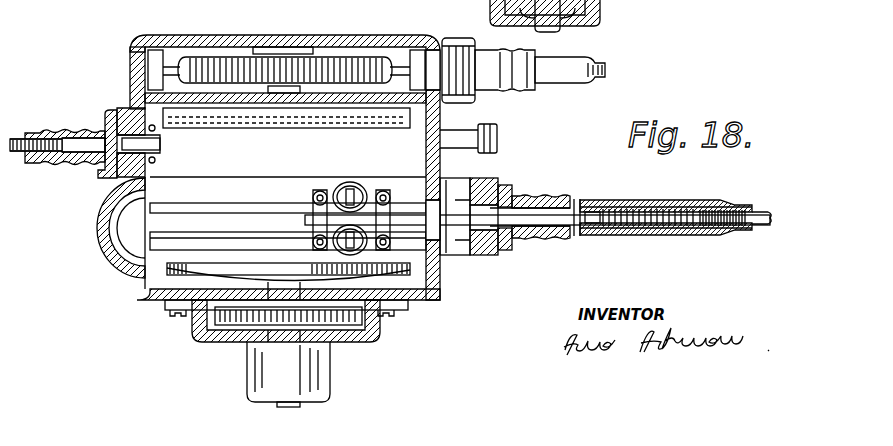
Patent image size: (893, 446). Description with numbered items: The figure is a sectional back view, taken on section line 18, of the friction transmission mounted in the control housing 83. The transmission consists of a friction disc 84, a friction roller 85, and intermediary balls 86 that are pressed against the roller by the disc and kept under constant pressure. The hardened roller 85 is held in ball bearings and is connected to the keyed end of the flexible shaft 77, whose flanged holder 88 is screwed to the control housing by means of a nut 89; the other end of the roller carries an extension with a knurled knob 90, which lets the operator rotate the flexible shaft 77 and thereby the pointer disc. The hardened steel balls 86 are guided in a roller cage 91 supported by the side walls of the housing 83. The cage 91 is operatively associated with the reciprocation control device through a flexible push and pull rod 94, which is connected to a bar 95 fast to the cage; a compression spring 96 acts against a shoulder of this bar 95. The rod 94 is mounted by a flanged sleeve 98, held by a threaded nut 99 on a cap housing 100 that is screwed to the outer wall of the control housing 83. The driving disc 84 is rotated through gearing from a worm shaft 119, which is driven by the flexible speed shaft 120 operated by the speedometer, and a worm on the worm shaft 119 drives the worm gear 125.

The section line 18 is at (542, 22).
The flexible shaft 77 is at (36, 153).
The control housing 83 is at (130, 56).
The friction disc 84 is at (168, 266).
The friction roller 85 is at (205, 174).
The intermediary balls 86 is at (382, 182).
The flanged holder 88 is at (66, 128).
The nut 89 is at (104, 177).
The knurled knob 90 is at (499, 139).
The roller cage 91 is at (308, 204).
The flexible push and pull rod 94 is at (738, 234).
The bar 95 is at (560, 225).
The compression spring 96 is at (628, 236).
The flanged sleeve 98 is at (530, 238).
The threaded nut 99 is at (510, 252).
The cap housing 100 is at (470, 255).
The worm shaft 119 is at (170, 64).
The flexible speed shaft 120 is at (612, 68).
The worm gear 125 is at (235, 60).